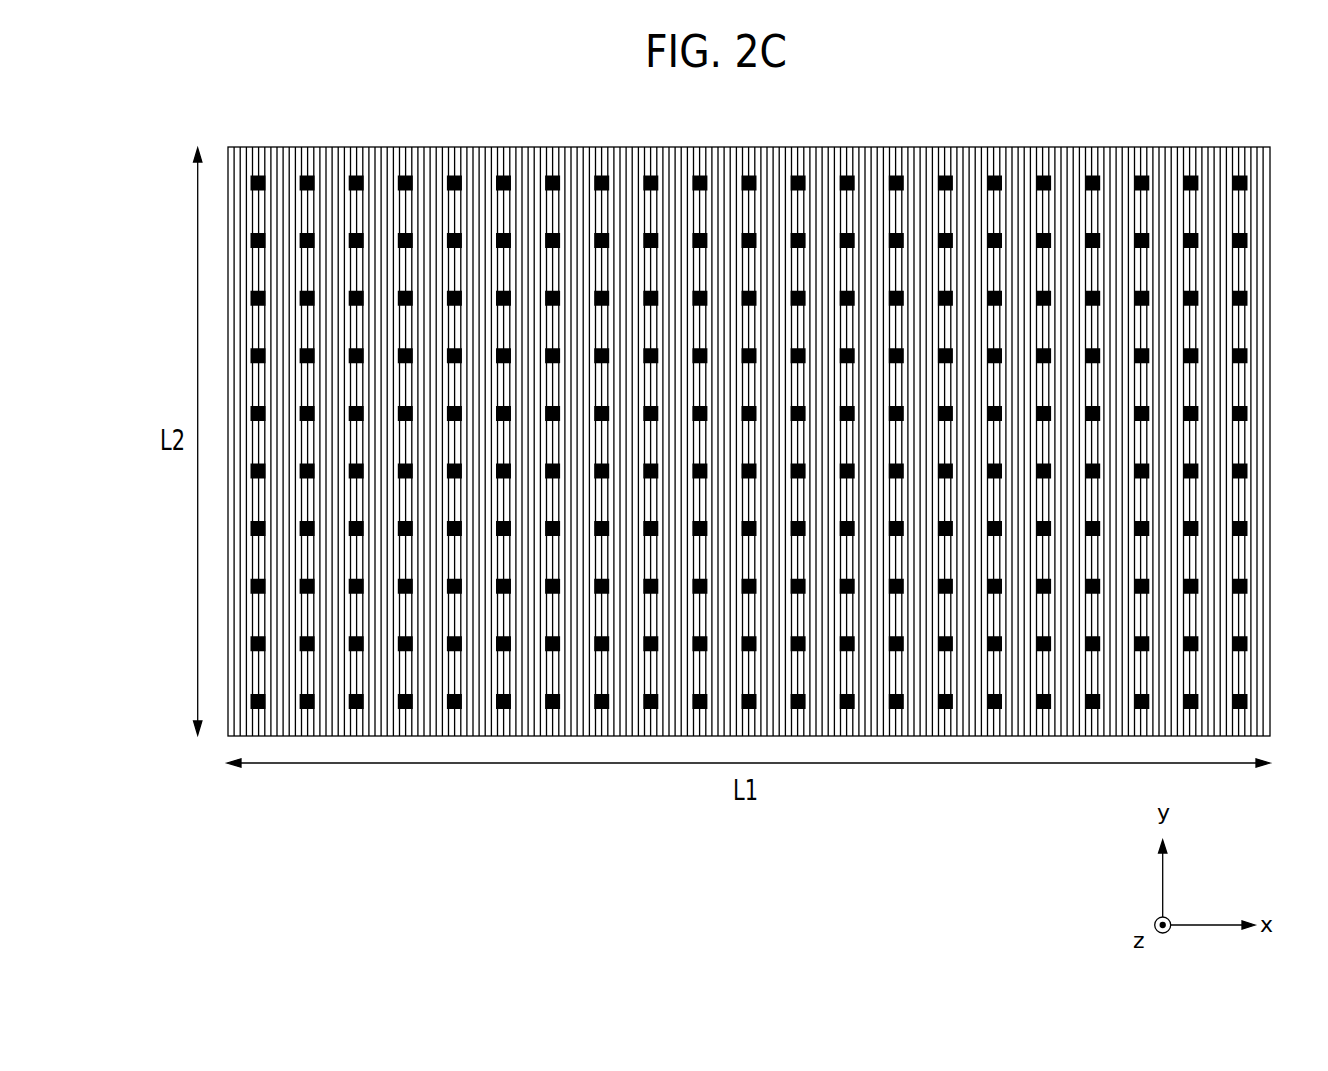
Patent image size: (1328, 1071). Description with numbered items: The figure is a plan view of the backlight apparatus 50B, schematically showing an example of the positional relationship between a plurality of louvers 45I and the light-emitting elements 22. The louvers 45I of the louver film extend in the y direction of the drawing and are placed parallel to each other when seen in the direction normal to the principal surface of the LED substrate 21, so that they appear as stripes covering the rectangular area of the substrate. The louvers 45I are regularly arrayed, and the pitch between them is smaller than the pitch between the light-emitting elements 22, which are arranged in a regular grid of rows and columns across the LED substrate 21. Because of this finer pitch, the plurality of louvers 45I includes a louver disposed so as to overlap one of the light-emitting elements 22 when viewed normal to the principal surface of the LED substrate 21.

The LED substrate 21 is at (1117, 153).
The light-emitting elements 22 is at (993, 162).
The louvers 45I is at (845, 158).
The backlight apparatus 50B is at (768, 379).